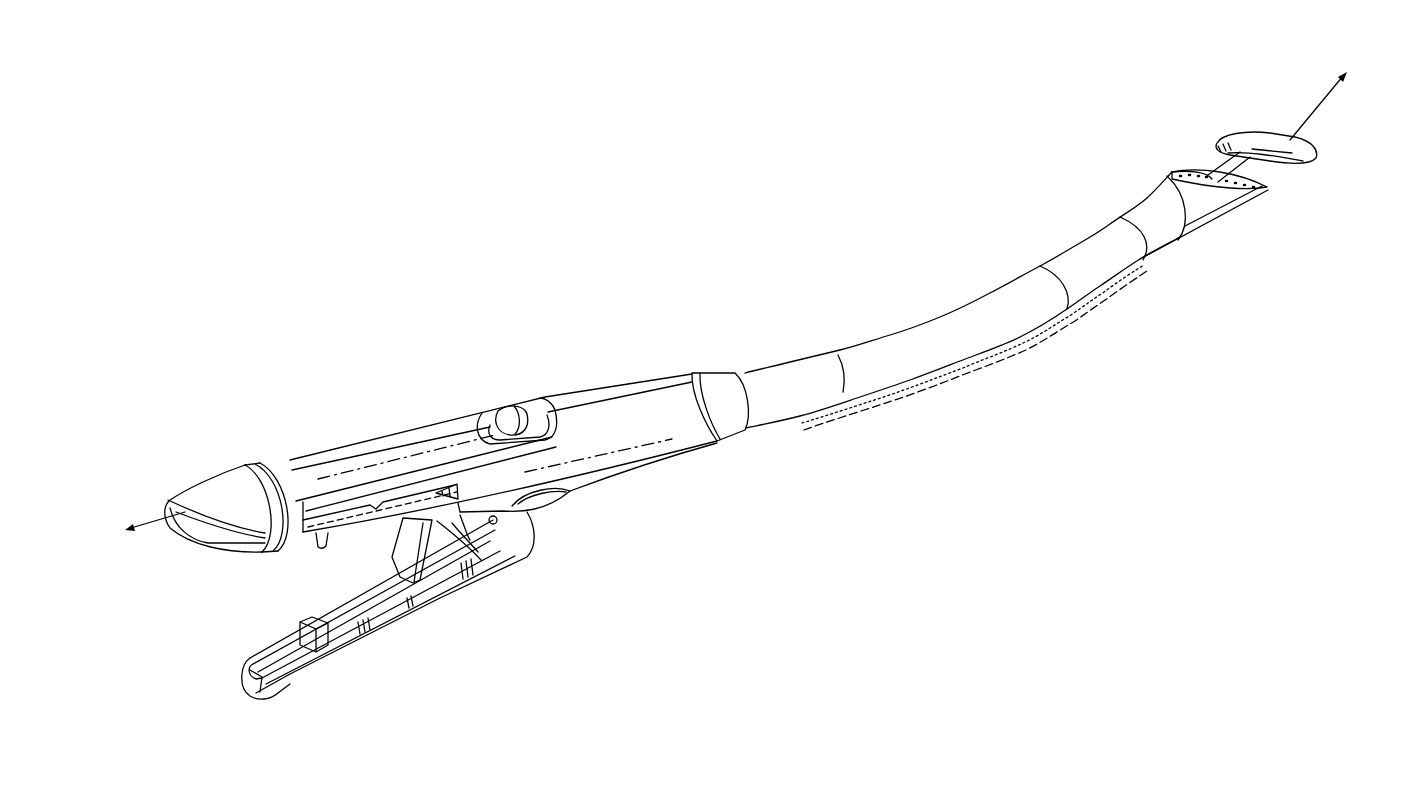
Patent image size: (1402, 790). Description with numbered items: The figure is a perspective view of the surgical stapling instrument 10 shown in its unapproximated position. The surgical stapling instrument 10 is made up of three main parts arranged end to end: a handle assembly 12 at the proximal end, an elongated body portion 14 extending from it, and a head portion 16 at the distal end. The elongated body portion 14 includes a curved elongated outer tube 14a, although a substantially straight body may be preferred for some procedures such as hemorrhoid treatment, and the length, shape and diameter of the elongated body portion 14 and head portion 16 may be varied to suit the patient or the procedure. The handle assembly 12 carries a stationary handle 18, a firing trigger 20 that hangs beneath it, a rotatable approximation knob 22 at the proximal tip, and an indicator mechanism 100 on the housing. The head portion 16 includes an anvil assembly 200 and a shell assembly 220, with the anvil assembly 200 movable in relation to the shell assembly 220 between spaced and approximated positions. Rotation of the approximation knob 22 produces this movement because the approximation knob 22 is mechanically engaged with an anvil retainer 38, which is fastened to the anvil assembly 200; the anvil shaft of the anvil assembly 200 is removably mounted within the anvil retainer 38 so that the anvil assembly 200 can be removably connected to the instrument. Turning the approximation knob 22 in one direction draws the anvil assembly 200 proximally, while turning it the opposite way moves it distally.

The surgical stapling instrument 10 is at (659, 294).
The handle assembly 12 is at (328, 420).
The elongated body portion 14 is at (915, 291).
The curved elongated outer tube 14a is at (958, 360).
The head portion 16 is at (1182, 146).
The stationary handle 18 is at (440, 447).
The firing trigger 20 is at (318, 660).
The rotatable approximation knob 22 is at (185, 494).
The anvil retainer 38 is at (1262, 173).
The indicator mechanism 100 is at (503, 412).
The anvil assembly 200 is at (1300, 148).
The shell assembly 220 is at (1228, 218).